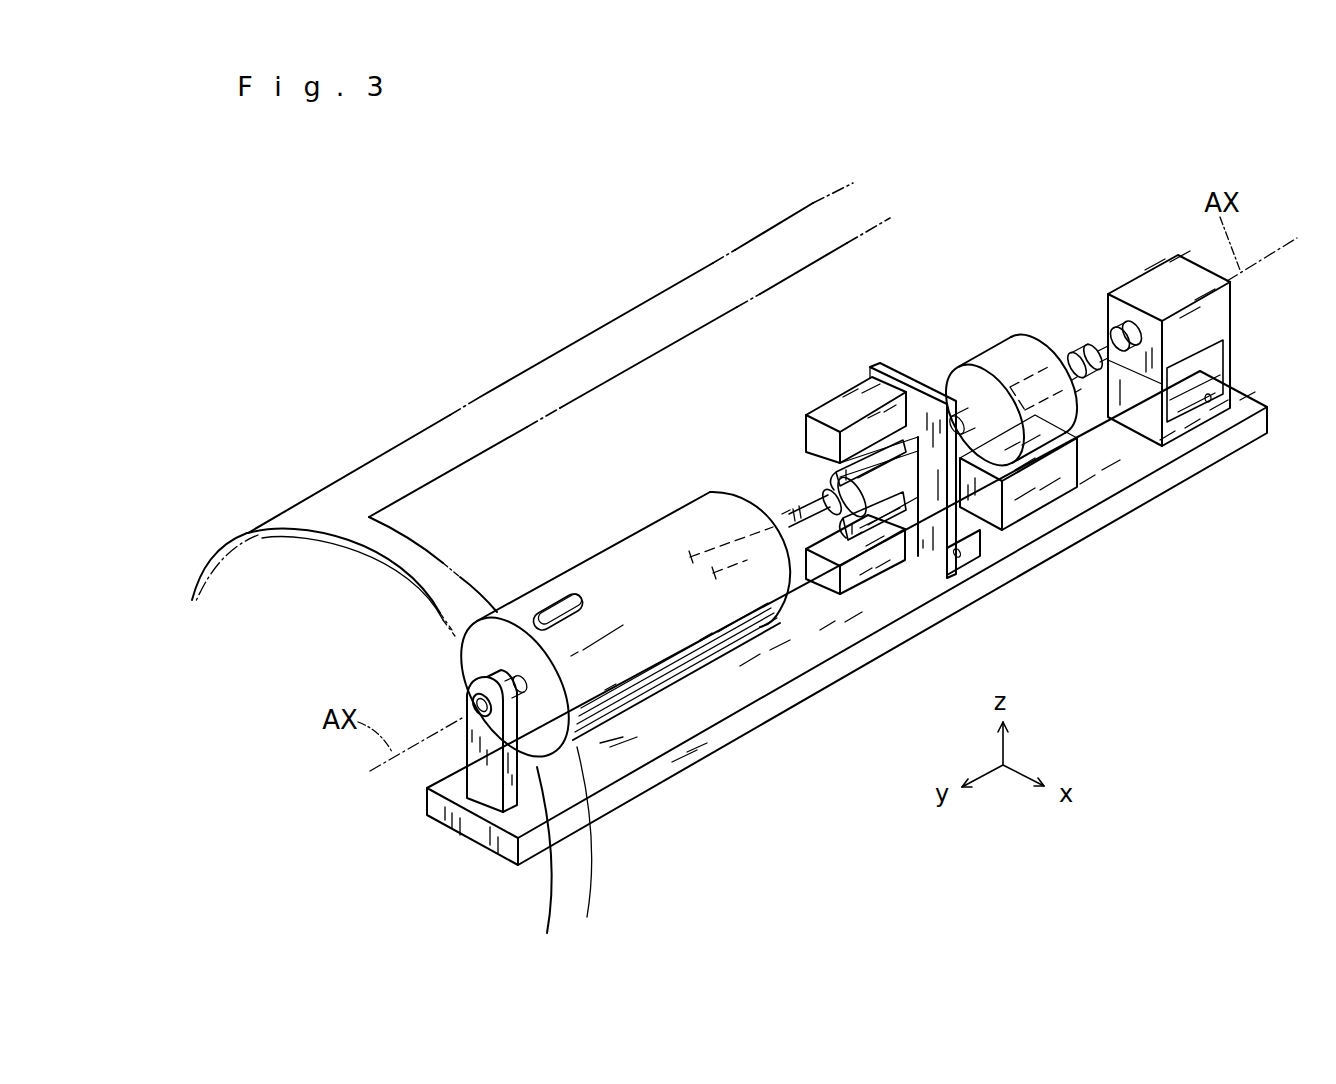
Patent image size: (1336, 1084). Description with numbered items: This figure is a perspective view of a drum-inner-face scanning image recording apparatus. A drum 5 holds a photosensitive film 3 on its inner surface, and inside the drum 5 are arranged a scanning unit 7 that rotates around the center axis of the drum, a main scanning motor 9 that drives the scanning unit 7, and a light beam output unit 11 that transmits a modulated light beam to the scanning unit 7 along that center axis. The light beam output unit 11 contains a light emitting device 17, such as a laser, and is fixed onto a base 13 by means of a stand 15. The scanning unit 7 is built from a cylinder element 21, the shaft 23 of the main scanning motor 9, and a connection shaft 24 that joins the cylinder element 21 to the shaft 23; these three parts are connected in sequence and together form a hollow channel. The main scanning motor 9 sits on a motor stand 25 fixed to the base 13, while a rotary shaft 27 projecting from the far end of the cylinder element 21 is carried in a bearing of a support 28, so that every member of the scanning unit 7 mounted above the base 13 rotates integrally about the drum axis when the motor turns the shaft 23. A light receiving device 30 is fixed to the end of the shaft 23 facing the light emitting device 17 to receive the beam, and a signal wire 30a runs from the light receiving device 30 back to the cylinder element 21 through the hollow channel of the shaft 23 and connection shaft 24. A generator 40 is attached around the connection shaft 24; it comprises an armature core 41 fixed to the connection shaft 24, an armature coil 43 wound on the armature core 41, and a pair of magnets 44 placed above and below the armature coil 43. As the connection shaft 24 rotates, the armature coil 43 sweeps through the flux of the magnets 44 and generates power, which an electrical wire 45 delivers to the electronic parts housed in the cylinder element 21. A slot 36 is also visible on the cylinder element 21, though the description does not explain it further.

The photosensitive film 3 is at (397, 500).
The drum 5 is at (307, 495).
The scanning unit 7 is at (754, 111).
The main scanning motor 9 is at (1040, 427).
The light beam output unit 11 is at (1233, 317).
The base 13 is at (1228, 446).
The stand 15 is at (1232, 372).
The light emitting device 17 is at (1137, 355).
The cylinder element 21 is at (673, 507).
The shaft 23 is at (1030, 344).
The connection shaft 24 is at (813, 493).
The motor stand 25 is at (1040, 497).
The rotary shaft 27 is at (490, 663).
The support 28 is at (468, 700).
The light receiving device 30 is at (1085, 350).
The signal wire 30a is at (745, 560).
The slot 36 is at (556, 603).
The generator 40 is at (863, 597).
The armature core 41 is at (827, 490).
The armature coil 43 is at (837, 463).
The magnets 44 is at (852, 398).
The electrical wire 45 is at (793, 497).